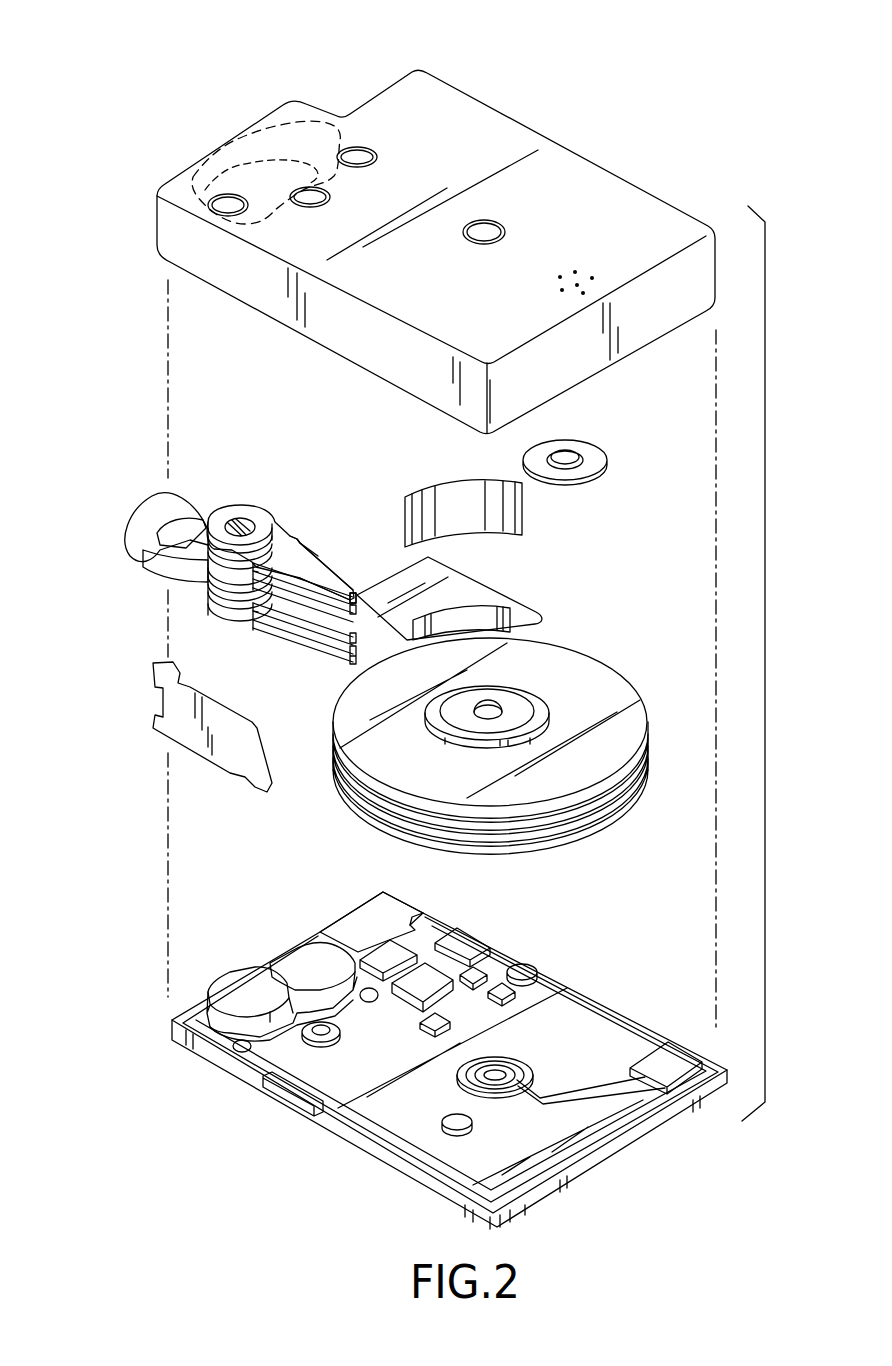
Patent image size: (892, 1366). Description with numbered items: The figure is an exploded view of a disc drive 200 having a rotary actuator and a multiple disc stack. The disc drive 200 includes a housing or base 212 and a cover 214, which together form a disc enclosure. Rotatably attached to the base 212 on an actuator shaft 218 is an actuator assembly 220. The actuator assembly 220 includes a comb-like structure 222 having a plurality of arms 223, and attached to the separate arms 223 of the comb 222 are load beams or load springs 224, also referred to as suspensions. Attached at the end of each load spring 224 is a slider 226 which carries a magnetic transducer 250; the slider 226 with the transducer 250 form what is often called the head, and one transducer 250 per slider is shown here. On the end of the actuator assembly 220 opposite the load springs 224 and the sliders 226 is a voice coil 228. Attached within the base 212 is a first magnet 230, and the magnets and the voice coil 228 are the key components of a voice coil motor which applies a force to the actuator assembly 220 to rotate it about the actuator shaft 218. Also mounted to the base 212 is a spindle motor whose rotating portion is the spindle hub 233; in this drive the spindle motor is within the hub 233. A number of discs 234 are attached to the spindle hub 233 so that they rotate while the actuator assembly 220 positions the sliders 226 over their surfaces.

The disc drive 200 is at (612, 84).
The base 212 is at (615, 1030).
The cover 214 is at (600, 193).
The actuator shaft 218 is at (240, 520).
The actuator assembly 220 is at (190, 572).
The comb-like structure 222 is at (258, 623).
The arms 223 is at (298, 537).
The load beams or load springs 224 is at (310, 563).
The slider 226 is at (353, 593).
The voice coil 228 is at (146, 524).
The first magnet 230 is at (262, 129).
The spindle hub 233 is at (495, 700).
The discs 234 is at (615, 687).
The magnetic transducer 250 is at (395, 597).